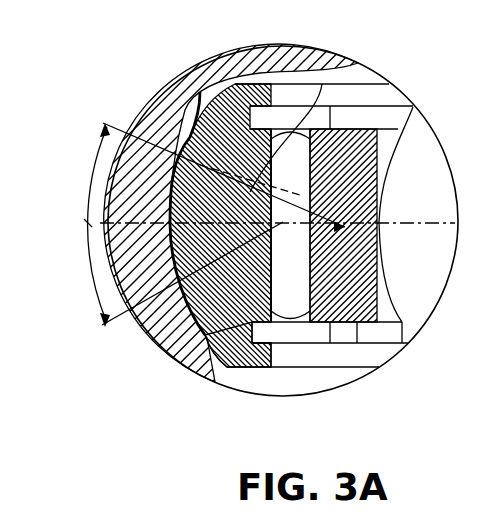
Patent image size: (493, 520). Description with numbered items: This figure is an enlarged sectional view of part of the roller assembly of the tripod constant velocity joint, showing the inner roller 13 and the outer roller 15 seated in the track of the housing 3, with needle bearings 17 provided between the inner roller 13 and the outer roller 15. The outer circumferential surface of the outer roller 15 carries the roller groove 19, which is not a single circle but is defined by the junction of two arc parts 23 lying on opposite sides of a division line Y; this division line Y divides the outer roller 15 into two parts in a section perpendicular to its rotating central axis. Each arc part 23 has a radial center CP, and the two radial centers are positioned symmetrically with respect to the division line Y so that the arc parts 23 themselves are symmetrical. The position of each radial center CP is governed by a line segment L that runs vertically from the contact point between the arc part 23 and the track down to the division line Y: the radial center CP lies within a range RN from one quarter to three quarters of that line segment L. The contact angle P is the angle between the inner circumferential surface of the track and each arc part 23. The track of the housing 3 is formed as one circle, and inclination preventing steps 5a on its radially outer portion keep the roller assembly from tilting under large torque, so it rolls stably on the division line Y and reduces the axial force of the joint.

The housing 3 is at (162, 123).
The arc part 23 is at (215, 92).
The range RN is at (322, 84).
The inclination preventing step 5a is at (360, 70).
The roller groove 19 is at (103, 123).
The contact angle P is at (173, 225).
The radial center CP is at (345, 227).
The line segment L is at (163, 350).
The outer roller 15 is at (228, 365).
The needle bearings 17 is at (292, 306).
The inner roller 13 is at (368, 303).
The division line Y is at (428, 220).